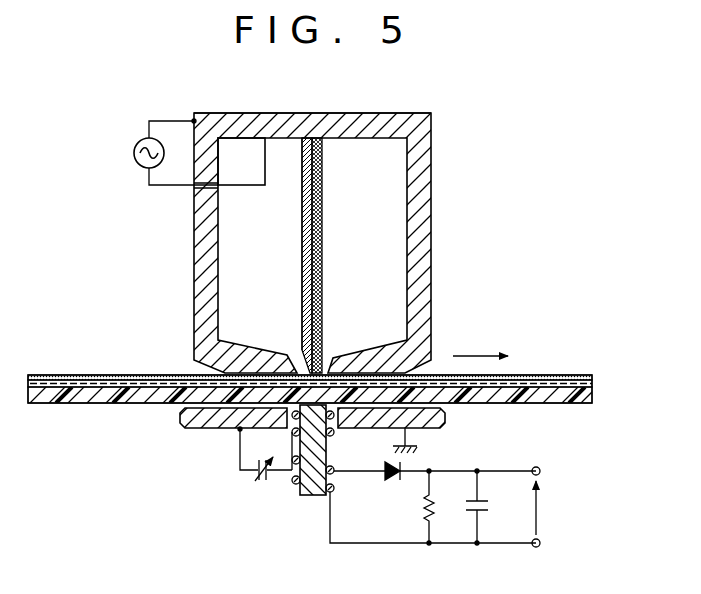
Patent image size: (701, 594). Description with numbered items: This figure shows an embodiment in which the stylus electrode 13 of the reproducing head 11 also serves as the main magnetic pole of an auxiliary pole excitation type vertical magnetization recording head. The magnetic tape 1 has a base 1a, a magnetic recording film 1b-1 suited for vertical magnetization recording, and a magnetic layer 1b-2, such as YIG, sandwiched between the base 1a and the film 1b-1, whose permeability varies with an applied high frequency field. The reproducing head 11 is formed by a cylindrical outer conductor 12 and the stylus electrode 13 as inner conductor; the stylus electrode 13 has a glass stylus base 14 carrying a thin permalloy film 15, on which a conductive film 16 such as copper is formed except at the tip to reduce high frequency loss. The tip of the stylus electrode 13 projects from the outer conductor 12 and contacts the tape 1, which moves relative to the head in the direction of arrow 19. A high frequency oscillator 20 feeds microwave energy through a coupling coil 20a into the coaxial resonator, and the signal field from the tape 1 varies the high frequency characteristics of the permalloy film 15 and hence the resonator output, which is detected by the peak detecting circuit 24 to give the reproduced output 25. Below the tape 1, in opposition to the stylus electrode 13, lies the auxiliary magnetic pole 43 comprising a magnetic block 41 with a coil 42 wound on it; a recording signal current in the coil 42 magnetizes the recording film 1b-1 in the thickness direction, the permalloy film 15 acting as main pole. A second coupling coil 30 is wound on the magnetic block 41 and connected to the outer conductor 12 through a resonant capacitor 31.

The magnetic tape 1 is at (594, 371).
The base 1a is at (592, 396).
The magnetic recording film 1b-1 is at (560, 374).
The magnetic layer 1b-2 is at (592, 382).
The reproducing head 11 is at (438, 248).
The outer conductor 12 is at (284, 112).
The stylus electrode 13 is at (298, 305).
The stylus base 14 is at (322, 236).
The permalloy film 15 is at (302, 216).
The conductive film 16 is at (302, 258).
The arrow 19 is at (472, 352).
The high frequency oscillator 20 is at (133, 153).
The coupling coil 20a is at (238, 186).
The peak detecting circuit 24 is at (449, 488).
The reproduced output 25 is at (539, 510).
The second coupling coil 30 is at (333, 434).
The resonant capacitor 31 is at (250, 477).
The magnetic block 41 is at (315, 496).
The coil 42 is at (294, 484).
The auxiliary magnetic pole 43 is at (340, 482).